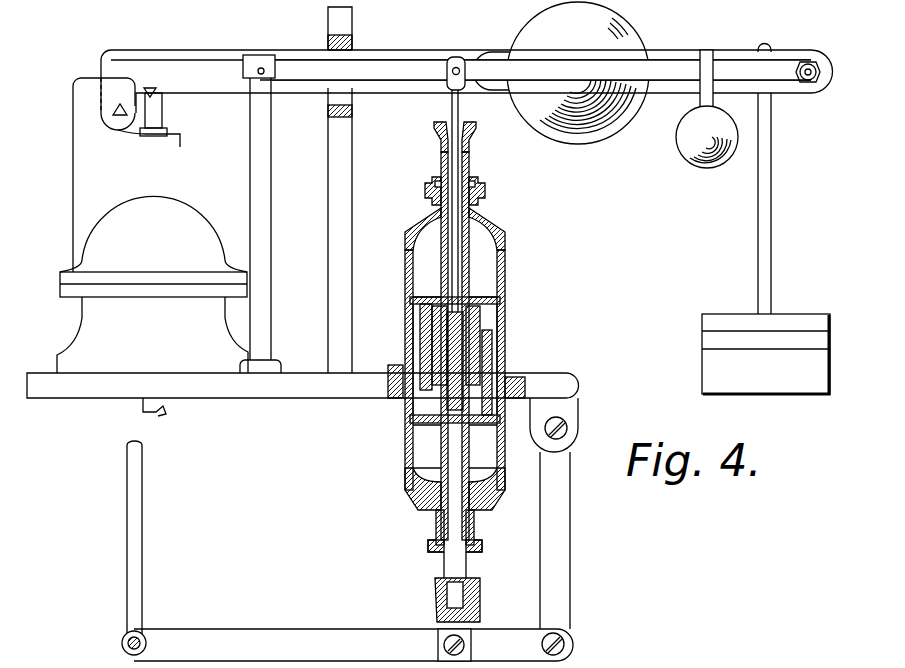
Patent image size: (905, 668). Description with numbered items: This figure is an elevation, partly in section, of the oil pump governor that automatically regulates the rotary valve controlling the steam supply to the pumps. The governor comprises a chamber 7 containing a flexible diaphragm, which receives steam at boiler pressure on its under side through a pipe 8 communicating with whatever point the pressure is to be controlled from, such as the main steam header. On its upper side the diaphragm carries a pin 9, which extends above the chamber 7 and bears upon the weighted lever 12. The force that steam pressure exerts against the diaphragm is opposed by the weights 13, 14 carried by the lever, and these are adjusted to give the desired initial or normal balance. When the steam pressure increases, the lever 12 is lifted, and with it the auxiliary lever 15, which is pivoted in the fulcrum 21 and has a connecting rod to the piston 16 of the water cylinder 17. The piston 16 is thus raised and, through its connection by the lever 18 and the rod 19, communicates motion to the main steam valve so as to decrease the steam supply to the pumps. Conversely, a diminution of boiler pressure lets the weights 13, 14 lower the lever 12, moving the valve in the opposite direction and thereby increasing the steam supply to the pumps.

The chamber 7 is at (208, 180).
The pipe 8 is at (161, 416).
The pin 9 is at (162, 118).
The weighted lever 12 is at (212, 58).
The weight 13 is at (630, 47).
The weight 14 is at (790, 314).
The auxiliary lever 15 is at (731, 68).
The piston 16 is at (470, 346).
The water cylinder 17 is at (505, 310).
The lever 18 is at (360, 628).
The rod 19 is at (143, 551).
The fulcrum 21 is at (272, 158).